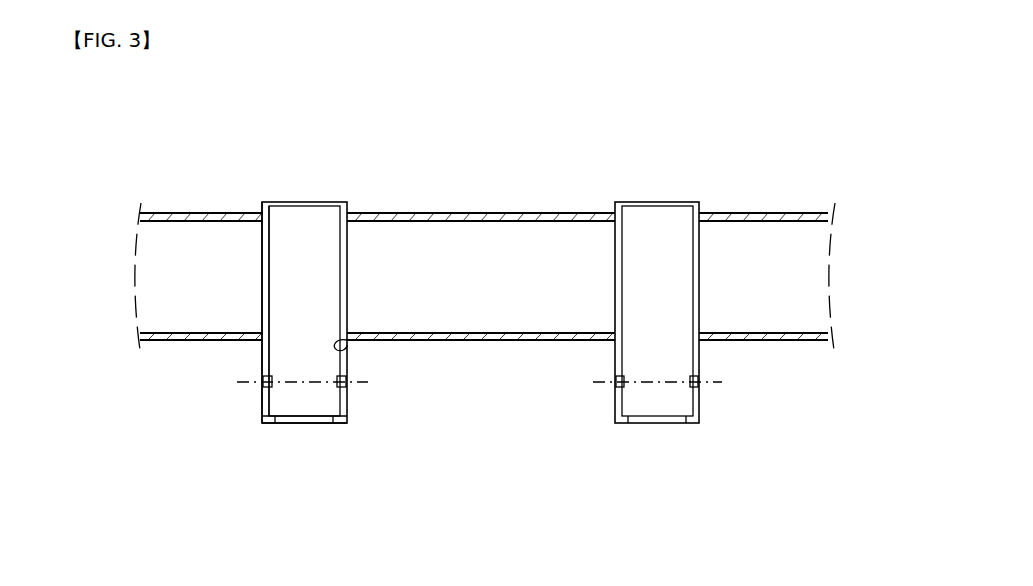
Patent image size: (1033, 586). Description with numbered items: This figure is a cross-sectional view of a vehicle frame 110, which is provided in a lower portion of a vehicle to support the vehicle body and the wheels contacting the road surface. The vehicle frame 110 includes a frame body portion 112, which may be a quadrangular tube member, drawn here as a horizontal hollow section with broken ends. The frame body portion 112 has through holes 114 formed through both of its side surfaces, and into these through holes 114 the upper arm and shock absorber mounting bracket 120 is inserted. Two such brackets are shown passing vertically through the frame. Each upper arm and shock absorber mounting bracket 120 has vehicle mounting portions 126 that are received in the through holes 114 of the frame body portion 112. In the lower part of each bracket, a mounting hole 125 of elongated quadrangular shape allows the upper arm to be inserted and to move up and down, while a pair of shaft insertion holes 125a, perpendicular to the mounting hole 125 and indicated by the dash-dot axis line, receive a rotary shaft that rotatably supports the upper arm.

The vehicle frame 110 is at (428, 191).
The frame body portion 112 is at (203, 213).
The through hole 114 is at (345, 349).
The upper arm and shock absorber mounting bracket 120 is at (255, 425).
The mounting hole 125 is at (313, 416).
The shaft insertion hole 125a is at (348, 386).
The vehicle mounting portion 126 is at (262, 355).